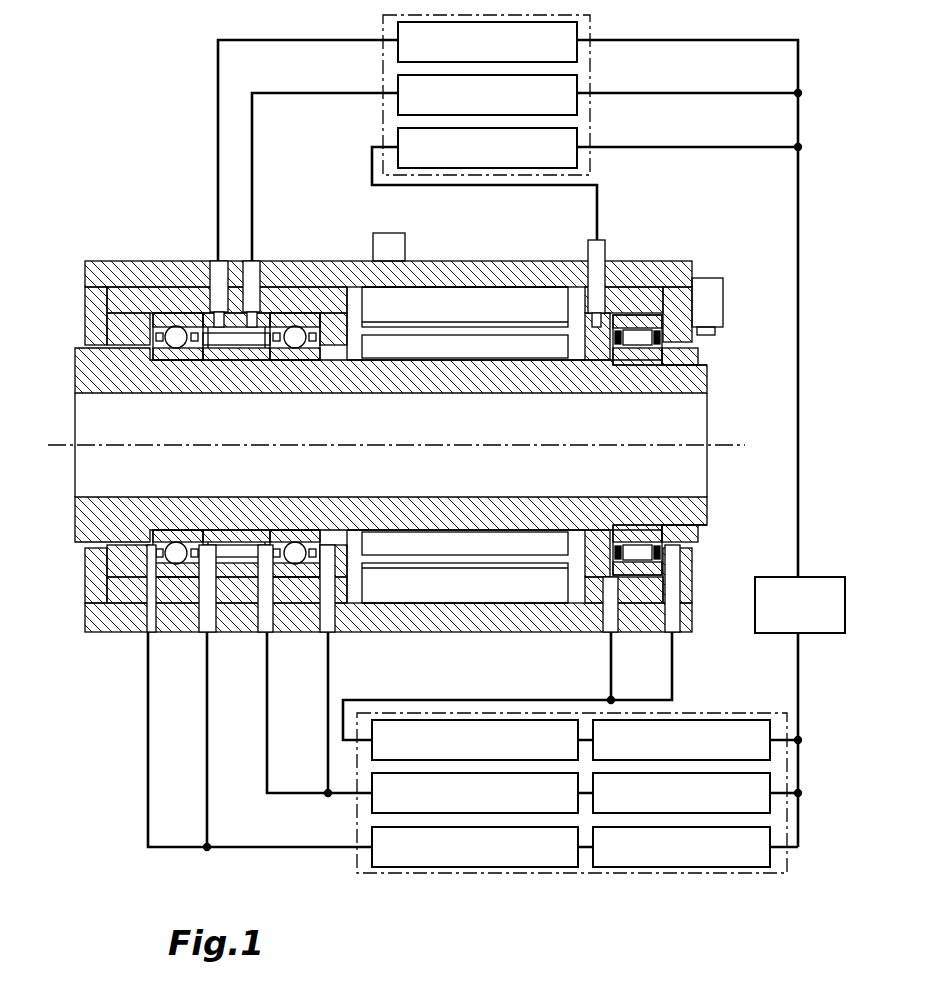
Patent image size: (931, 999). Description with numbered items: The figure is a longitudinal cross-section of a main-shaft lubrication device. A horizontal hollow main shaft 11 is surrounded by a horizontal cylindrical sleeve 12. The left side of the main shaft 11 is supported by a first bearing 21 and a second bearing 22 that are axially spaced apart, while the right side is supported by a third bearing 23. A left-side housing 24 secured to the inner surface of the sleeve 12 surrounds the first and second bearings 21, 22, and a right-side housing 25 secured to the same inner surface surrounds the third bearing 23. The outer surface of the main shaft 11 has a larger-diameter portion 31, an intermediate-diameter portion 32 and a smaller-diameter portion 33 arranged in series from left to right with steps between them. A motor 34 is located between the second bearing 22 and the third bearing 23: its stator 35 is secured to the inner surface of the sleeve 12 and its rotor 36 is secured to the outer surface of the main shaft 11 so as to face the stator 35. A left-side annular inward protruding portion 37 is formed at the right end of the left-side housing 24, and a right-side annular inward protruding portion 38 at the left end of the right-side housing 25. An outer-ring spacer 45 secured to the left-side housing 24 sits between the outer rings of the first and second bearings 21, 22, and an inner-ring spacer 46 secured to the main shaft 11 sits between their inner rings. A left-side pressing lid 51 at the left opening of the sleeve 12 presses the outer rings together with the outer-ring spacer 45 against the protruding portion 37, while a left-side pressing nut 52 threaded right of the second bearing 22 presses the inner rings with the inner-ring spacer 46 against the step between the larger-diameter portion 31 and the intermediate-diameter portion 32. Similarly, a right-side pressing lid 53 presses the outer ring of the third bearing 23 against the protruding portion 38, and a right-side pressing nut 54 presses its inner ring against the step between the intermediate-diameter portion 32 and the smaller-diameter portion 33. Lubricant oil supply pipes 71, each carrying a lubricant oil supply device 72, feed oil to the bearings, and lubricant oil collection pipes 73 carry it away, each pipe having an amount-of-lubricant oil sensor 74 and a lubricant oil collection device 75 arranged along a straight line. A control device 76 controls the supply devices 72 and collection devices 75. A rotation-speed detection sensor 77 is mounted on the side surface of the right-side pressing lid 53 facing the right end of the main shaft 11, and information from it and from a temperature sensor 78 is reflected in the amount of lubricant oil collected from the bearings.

The main shaft 11 is at (96, 372).
The sleeve 12 is at (300, 262).
The first bearing 21 is at (168, 364).
The second bearing 22 is at (295, 364).
The third bearing 23 is at (631, 367).
The left-side housing 24 is at (132, 285).
The right-side housing 25 is at (627, 284).
The larger-diameter portion 31 is at (100, 343).
The intermediate-diameter portion 32 is at (400, 362).
The smaller-diameter portion 33 is at (683, 368).
The motor 34 is at (517, 285).
The stator 35 is at (453, 306).
The rotor 36 is at (468, 360).
The left-side annular-shaped inward protruding portion 37 is at (347, 289).
The right-side annular-shaped inward protruding portion 38 is at (584, 305).
The outer-ring spacer 45 is at (246, 362).
The inner-ring spacer 46 is at (211, 362).
The left-side pressing lid 51 is at (90, 280).
The left-side pressing nut 52 is at (340, 346).
The right-side pressing lid 53 is at (678, 282).
The right-side pressing nut 54 is at (698, 355).
The lubricant oil supply pipe 71 is at (217, 133).
The lubricant oil supply device 72 is at (590, 32).
The lubricant oil collection pipe 73 is at (478, 700).
The amount-of-lubricant oil sensor 74 is at (493, 719).
The lubricant oil collection device 75 is at (699, 719).
The control device 76 is at (813, 576).
The rotation-speed detection sensor 77 is at (710, 284).
The temperature sensor 78 is at (395, 234).